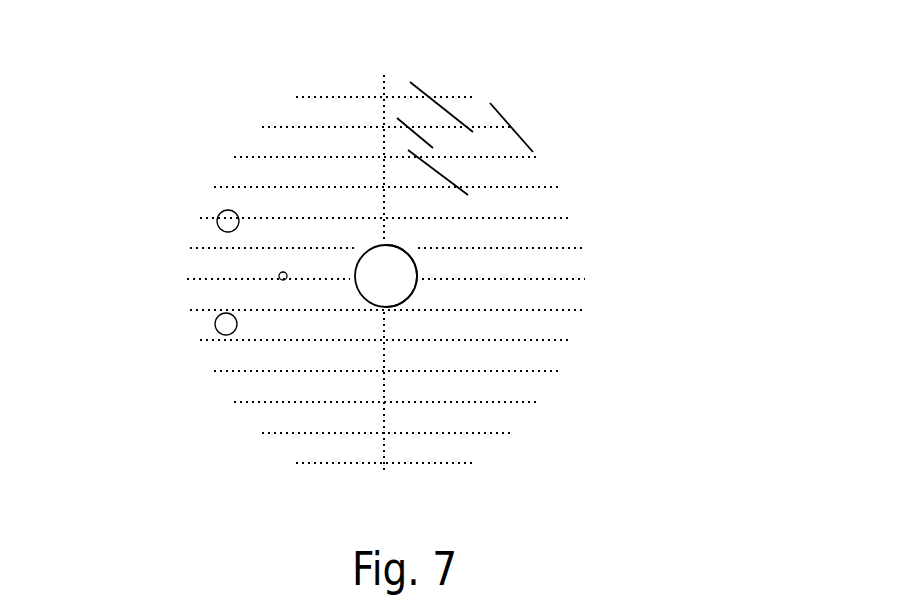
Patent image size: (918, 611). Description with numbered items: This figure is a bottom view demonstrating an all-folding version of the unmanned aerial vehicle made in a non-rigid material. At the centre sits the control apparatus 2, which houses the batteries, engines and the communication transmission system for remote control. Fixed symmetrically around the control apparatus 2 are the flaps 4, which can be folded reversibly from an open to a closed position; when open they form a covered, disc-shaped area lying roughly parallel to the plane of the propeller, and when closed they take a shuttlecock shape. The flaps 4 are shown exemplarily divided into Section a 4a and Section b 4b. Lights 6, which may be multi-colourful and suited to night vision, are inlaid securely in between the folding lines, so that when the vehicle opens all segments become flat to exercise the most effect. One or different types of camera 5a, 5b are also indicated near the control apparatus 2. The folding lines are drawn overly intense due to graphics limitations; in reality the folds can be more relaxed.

The control apparatus 2 is at (390, 267).
The flaps 4 is at (437, 269).
The Section a of the flaps 4a is at (178, 305).
The Section 4b of the flaps 4b is at (497, 98).
The camera 5a is at (423, 279).
The camera 5b is at (385, 315).
The lights 6 is at (278, 276).